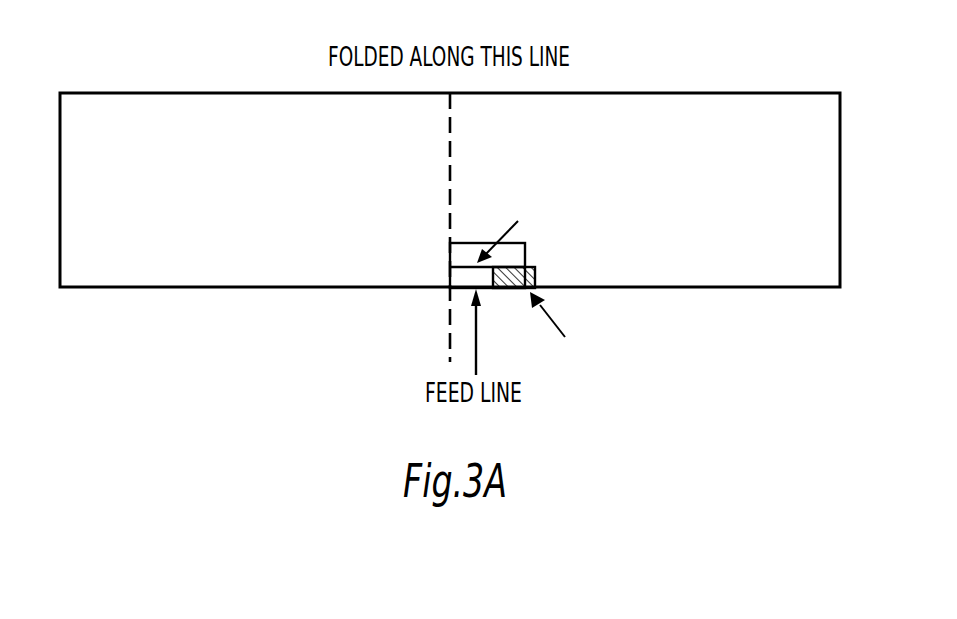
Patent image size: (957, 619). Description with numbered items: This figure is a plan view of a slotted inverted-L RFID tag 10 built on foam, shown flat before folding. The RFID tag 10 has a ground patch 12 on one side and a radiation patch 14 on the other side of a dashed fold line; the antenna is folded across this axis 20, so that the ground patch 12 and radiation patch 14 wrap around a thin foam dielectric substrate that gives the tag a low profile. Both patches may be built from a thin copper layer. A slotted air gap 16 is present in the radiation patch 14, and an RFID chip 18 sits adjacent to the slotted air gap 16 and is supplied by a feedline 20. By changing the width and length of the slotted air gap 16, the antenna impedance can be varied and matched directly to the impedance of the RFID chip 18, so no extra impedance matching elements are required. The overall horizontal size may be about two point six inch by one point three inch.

The RFID tag 10 is at (111, 92).
The ground patch 12 is at (232, 240).
The radiation patch 14 is at (755, 240).
The slotted air gap 16 is at (455, 252).
The RFID chip 18 is at (536, 265).
The feedline 20 is at (447, 171).